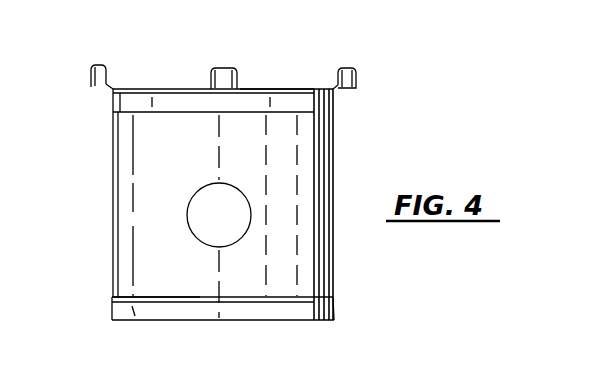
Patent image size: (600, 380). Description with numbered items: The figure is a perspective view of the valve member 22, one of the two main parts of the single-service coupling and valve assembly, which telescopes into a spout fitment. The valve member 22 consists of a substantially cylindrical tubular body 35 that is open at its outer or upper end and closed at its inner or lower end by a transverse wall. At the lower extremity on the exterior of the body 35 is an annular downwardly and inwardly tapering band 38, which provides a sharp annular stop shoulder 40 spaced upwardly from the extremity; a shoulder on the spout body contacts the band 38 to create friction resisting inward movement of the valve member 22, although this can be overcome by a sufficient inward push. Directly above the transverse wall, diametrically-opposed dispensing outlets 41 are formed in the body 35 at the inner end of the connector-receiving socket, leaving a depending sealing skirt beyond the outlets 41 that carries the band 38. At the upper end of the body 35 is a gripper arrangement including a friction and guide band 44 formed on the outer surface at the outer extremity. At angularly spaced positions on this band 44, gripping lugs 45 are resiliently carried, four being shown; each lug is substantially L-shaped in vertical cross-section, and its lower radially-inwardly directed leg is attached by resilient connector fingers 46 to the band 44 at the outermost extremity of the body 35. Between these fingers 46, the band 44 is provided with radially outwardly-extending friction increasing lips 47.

The valve member 22 is at (341, 161).
The tubular body 35 is at (130, 221).
The tapering band 38 is at (252, 310).
The stop shoulder 40 is at (138, 298).
The dispensing outlets 41 is at (210, 204).
The friction and guide band 44 is at (336, 100).
The gripping lugs 45 is at (96, 66).
The connector fingers 46 is at (109, 86).
The friction increasing lips 47 is at (279, 89).